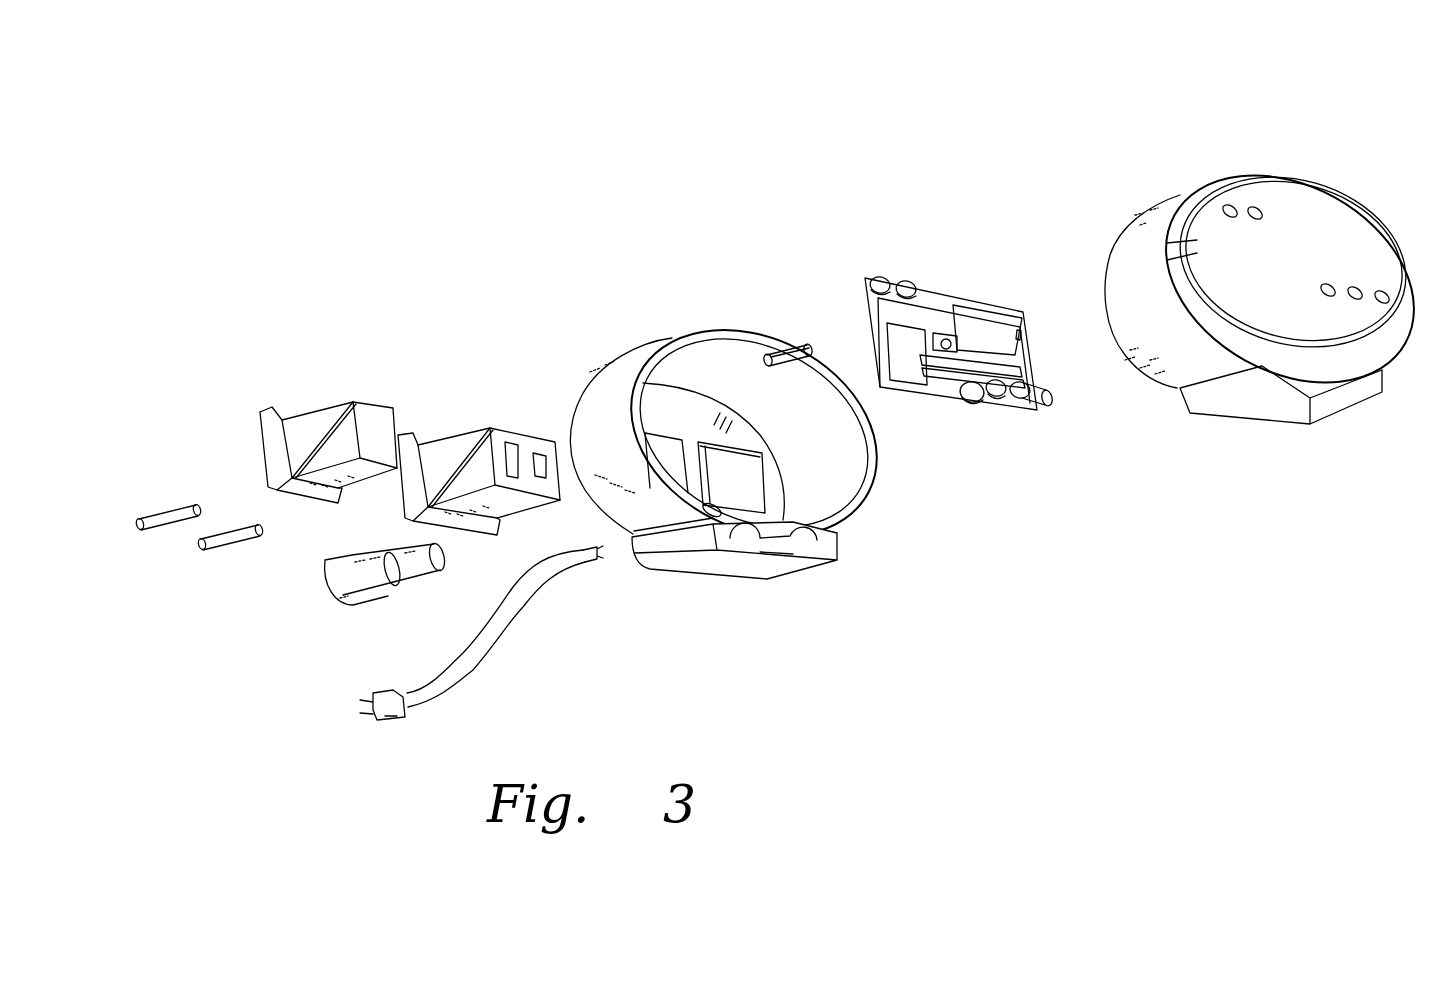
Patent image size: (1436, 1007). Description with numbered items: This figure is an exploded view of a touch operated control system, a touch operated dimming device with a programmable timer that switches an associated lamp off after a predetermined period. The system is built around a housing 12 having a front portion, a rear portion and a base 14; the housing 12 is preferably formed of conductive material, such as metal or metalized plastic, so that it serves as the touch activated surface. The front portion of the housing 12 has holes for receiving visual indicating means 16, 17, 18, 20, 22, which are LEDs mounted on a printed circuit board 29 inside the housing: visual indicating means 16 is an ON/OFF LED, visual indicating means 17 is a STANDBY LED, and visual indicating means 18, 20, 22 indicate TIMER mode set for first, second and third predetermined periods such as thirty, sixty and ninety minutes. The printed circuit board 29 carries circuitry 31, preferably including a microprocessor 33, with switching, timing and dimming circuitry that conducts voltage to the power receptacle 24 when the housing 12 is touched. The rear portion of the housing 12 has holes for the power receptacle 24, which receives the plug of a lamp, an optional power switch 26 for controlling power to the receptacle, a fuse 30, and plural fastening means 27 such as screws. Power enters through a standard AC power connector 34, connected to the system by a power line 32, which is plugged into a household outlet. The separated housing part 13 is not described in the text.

The housing 12 is at (1180, 198).
The housing 13 is at (632, 350).
The base 14 is at (780, 560).
The visual indicating means 16 is at (880, 283).
The visual indicating means 17 is at (908, 285).
The visual indicating means 18 is at (970, 400).
The visual indicating means 20 is at (1002, 400).
The visual indicating means 22 is at (1030, 410).
The power receptacle 24 is at (457, 437).
The power switch 26 is at (318, 400).
The fastening means 27 is at (223, 550).
The printed circuit board 29 is at (982, 303).
The fuse 30 is at (387, 597).
The circuitry 31 is at (1001, 330).
The power line 32 is at (515, 609).
The microprocessor 33 is at (1022, 363).
The AC power connector 34 is at (373, 694).